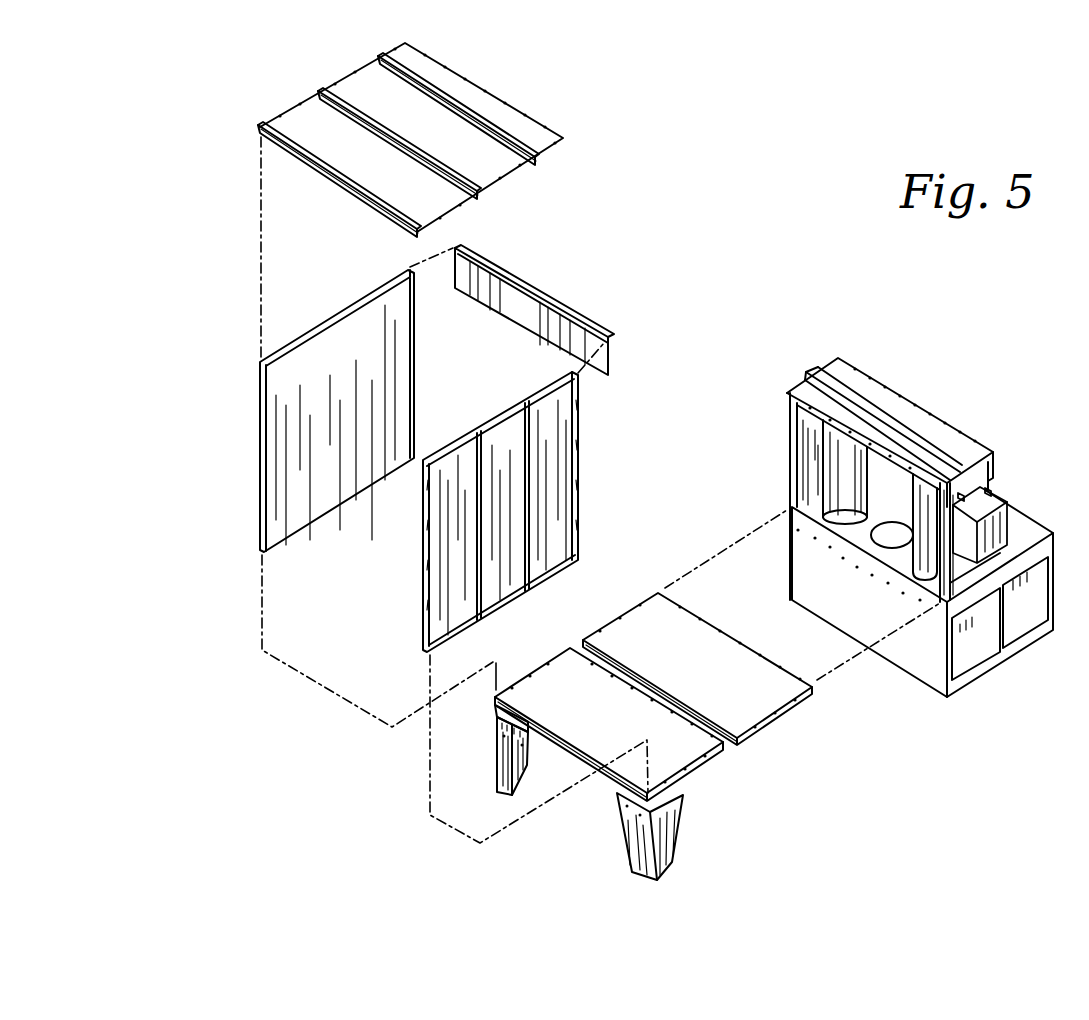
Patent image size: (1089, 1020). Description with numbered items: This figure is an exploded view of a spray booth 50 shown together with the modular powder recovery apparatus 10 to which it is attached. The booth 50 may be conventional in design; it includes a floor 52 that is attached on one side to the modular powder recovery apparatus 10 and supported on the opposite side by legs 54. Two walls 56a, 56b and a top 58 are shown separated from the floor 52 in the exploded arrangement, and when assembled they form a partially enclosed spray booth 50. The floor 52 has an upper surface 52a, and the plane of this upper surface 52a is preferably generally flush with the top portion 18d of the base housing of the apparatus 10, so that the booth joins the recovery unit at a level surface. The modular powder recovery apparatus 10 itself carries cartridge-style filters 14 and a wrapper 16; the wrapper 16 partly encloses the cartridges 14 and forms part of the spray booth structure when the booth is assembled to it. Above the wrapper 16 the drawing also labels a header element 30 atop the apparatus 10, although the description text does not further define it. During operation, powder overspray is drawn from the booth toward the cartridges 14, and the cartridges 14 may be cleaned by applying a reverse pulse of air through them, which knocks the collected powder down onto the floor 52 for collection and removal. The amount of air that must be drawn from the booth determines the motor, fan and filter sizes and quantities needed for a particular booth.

The modular powder recovery apparatus 10 is at (1025, 424).
The cartridge-style filter 14 is at (835, 457).
The wrapper 16 is at (788, 430).
The top portion of the base housing 18d is at (868, 532).
The header 30 is at (910, 412).
The spray booth 50 is at (210, 37).
The floor 52 is at (703, 768).
The floor upper surface 52a is at (632, 633).
The legs 54 is at (498, 766).
The wall 56a is at (312, 505).
The wall 56b is at (423, 582).
The top 58 is at (363, 200).